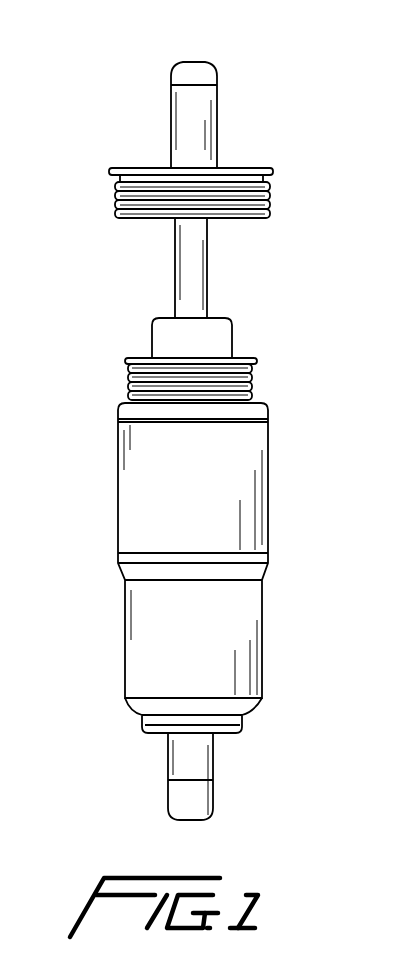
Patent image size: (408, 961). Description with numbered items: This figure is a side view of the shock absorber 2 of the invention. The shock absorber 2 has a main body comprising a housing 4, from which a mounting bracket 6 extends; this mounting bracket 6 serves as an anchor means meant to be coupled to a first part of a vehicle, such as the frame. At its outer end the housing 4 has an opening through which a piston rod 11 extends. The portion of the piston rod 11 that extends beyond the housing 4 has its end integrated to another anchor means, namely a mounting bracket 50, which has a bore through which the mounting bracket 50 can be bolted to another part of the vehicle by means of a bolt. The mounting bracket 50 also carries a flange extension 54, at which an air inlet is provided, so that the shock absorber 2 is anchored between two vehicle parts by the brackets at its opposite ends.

The shock absorber 2 is at (221, 414).
The housing 4 is at (268, 500).
The mounting bracket 6 is at (168, 768).
The piston rod 11 is at (175, 268).
The mounting bracket 50 is at (214, 66).
The flange extension 54 is at (270, 203).